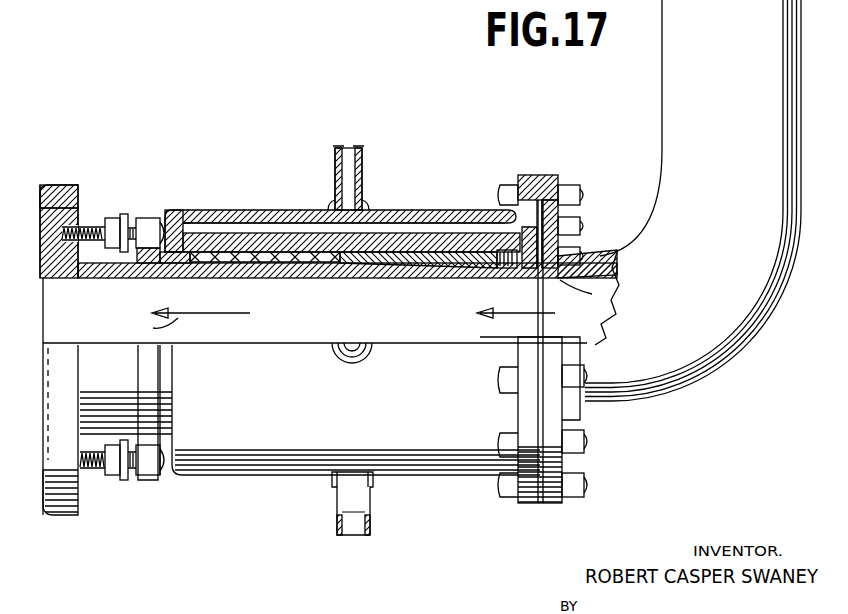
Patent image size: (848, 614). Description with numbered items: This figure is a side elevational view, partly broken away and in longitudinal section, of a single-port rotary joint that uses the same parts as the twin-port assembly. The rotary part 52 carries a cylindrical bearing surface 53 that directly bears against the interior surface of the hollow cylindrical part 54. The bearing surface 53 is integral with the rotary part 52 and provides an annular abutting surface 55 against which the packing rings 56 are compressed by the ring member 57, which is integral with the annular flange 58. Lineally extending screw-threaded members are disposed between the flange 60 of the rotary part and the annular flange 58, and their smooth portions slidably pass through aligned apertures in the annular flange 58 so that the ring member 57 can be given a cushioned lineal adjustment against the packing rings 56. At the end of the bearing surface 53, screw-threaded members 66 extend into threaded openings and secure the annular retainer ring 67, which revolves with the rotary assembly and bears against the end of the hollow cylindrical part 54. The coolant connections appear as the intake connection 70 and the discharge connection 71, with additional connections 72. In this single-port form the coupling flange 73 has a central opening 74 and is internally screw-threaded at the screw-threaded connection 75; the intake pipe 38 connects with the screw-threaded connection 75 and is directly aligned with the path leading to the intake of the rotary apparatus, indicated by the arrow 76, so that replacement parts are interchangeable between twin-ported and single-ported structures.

The intake pipe 38 is at (724, 318).
The rotary part 52 is at (96, 270).
The bearing surface 53 is at (412, 248).
The hollow cylindrical part 54 is at (466, 240).
The annular abutting surface 55 is at (376, 236).
The packing rings 56 is at (246, 250).
The ring member 57 is at (192, 262).
The annular flange 58 is at (145, 216).
The flange of the rotary part 60 is at (62, 188).
The screw-threaded members 66 is at (495, 265).
The annular retainer ring 67 is at (527, 281).
The intake connection 70 is at (352, 170).
The discharge connection 71 is at (362, 510).
The additional connections 72 is at (350, 356).
The coupling flange 73 is at (560, 180).
The central opening 74 is at (587, 280).
The screw-threaded connection 75 is at (592, 246).
The arrow 76 is at (332, 320).